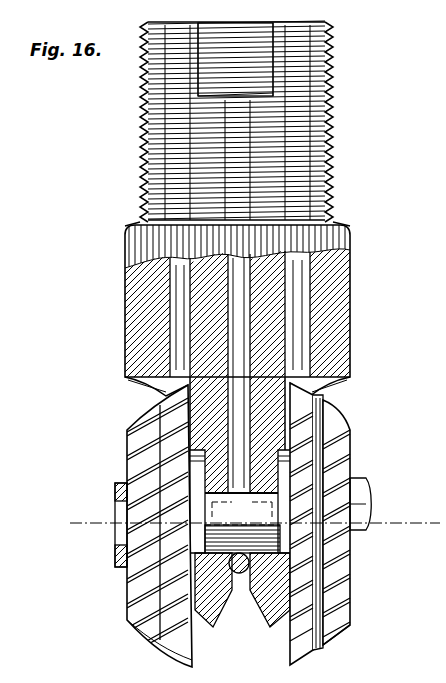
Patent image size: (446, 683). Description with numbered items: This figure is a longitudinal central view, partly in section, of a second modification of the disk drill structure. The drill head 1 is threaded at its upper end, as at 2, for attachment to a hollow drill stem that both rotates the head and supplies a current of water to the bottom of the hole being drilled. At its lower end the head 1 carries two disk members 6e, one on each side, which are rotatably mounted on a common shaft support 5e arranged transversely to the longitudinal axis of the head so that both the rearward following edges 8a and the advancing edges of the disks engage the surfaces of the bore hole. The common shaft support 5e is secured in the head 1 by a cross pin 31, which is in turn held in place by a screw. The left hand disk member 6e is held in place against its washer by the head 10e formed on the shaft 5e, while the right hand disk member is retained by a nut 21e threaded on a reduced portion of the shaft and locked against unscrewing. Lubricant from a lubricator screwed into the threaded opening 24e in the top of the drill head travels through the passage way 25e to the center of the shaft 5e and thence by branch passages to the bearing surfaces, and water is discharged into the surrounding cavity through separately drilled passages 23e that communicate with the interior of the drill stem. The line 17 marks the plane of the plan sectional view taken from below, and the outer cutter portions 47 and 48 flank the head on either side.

The head 1 is at (350, 355).
The threaded upper end 2 is at (330, 140).
The common shaft support 5e is at (238, 574).
The disk member 6e is at (350, 447).
The cutter tooth 8a is at (350, 622).
The head 10e is at (118, 546).
The section line 17— 17 is at (72, 514).
The retaining nut 21e is at (368, 548).
The separately drilled passages 23e is at (300, 52).
The threaded opening 24e is at (257, 45).
The passage way 25e is at (247, 318).
The cross pin 31 is at (262, 575).
The shoulder flange 47 is at (318, 400).
The roller cutter 48 is at (130, 474).